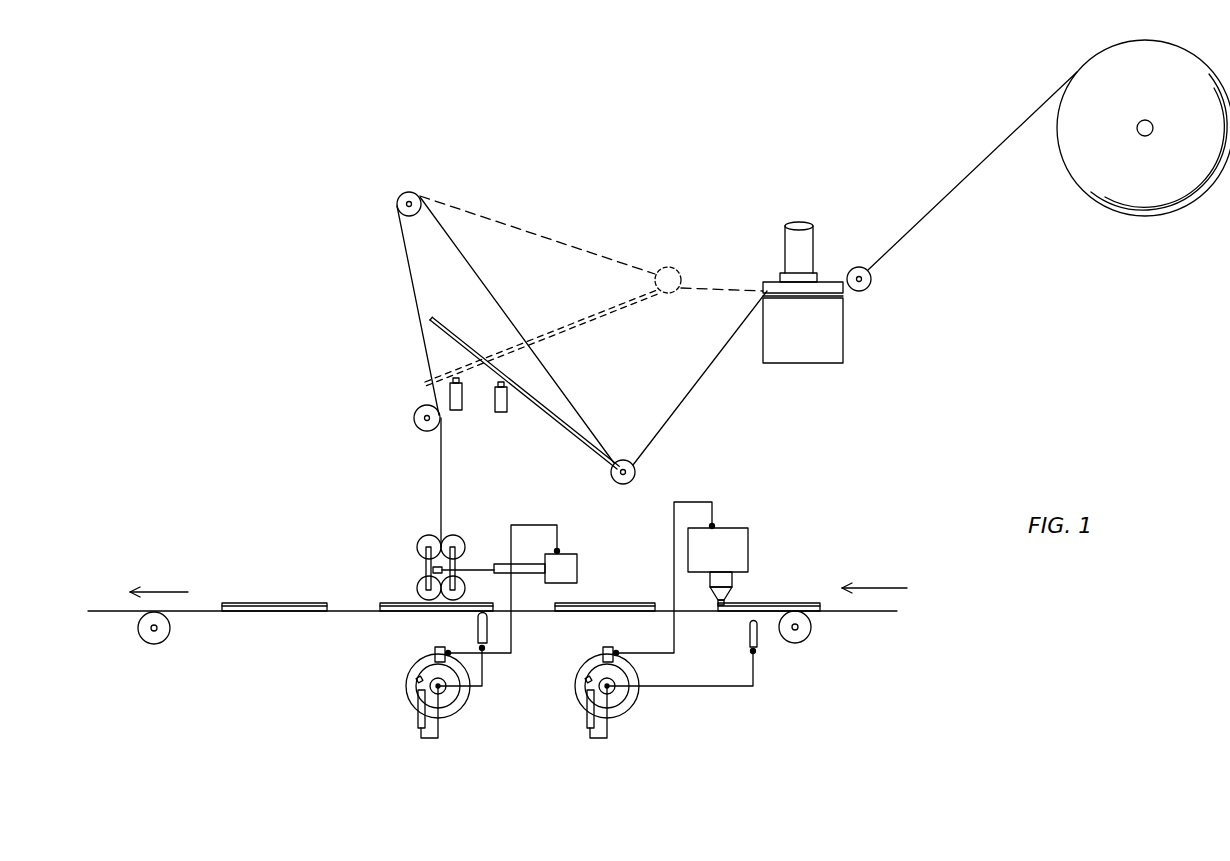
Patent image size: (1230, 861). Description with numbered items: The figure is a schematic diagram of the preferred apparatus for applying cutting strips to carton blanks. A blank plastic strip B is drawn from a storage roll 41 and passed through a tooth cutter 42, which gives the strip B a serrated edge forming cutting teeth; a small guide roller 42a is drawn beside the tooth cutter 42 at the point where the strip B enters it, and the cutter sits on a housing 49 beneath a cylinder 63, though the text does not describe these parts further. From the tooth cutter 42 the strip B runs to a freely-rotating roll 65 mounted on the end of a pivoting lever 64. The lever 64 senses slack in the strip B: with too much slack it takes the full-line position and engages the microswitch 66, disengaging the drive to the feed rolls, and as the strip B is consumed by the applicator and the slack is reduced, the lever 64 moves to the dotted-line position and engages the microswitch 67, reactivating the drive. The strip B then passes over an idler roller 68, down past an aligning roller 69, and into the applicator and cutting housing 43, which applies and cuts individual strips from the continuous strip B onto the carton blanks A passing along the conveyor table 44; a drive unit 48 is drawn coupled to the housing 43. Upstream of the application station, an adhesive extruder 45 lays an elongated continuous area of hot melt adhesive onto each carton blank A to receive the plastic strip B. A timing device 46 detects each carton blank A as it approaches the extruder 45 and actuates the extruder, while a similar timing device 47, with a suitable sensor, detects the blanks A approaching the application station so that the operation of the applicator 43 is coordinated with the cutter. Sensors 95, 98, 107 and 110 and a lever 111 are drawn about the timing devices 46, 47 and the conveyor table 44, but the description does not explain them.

The storage roll 41 is at (1157, 195).
The tooth cutter 42 is at (797, 368).
The guide roller 42a is at (873, 278).
The applicator and cutting housing 43 is at (418, 553).
The conveyor table 44 is at (207, 615).
The adhesive extruder 45 is at (758, 556).
The timing device 46 is at (634, 709).
The timing device 47 is at (455, 716).
The feed roller drive 48 is at (589, 575).
The head housing 49 is at (840, 340).
The cylinder 63 is at (790, 242).
The pivoting lever 64 is at (555, 418).
The freely-rotating roll 65 is at (637, 476).
The microswitch 66 is at (507, 410).
The microswitch 67 is at (462, 407).
The idler roller 68 is at (398, 200).
The aligning roller 69 is at (414, 426).
The sensor 95 is at (487, 635).
The switch 98 is at (438, 647).
The sensor 107 is at (757, 632).
The switch 110 is at (607, 647).
The lever 111 is at (588, 718).
The carton blank A is at (278, 601).
The plastic strip B is at (970, 182).